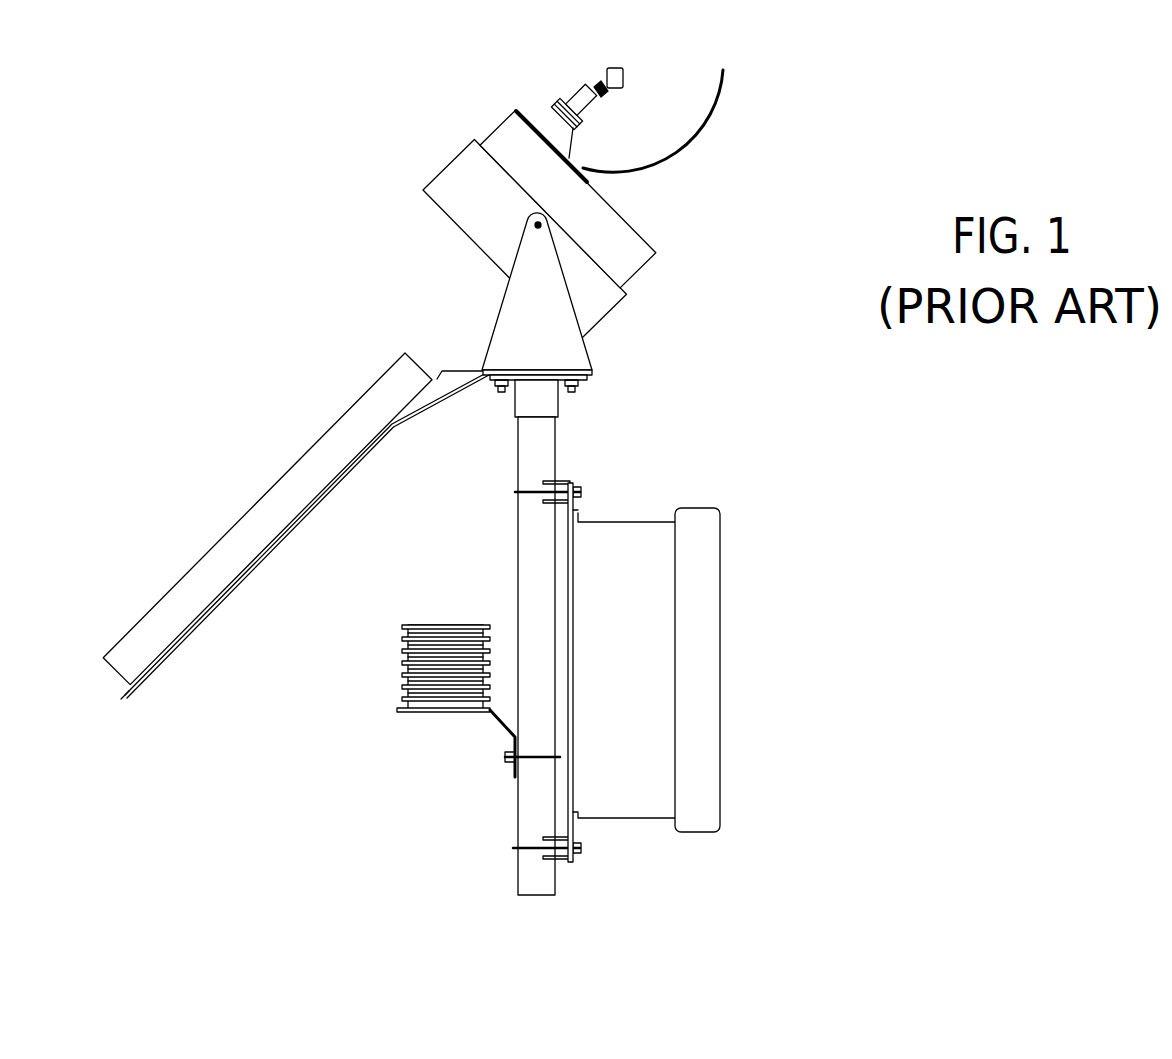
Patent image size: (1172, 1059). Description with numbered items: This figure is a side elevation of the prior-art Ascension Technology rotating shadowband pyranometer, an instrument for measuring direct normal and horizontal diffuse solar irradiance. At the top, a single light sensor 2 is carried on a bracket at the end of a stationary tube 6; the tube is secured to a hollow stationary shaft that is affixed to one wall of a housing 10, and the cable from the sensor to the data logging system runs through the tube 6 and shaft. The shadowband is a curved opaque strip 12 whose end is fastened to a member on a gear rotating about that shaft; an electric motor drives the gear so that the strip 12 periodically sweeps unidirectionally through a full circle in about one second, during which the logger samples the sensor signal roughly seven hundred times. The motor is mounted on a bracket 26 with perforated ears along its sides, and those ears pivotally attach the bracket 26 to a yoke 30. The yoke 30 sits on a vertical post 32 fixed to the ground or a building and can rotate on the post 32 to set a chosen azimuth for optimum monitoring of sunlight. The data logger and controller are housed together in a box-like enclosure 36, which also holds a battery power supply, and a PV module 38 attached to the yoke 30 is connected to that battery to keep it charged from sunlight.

The light sensor 2 is at (606, 70).
The stationary tube 6 is at (572, 97).
The housing 10 is at (496, 130).
The curved opaque strip 12 is at (713, 130).
The bracket 26 is at (453, 223).
The yoke 30 is at (578, 359).
The vertical post 32 is at (532, 567).
The box-like enclosure 36 is at (722, 625).
The PV module 38 is at (333, 422).